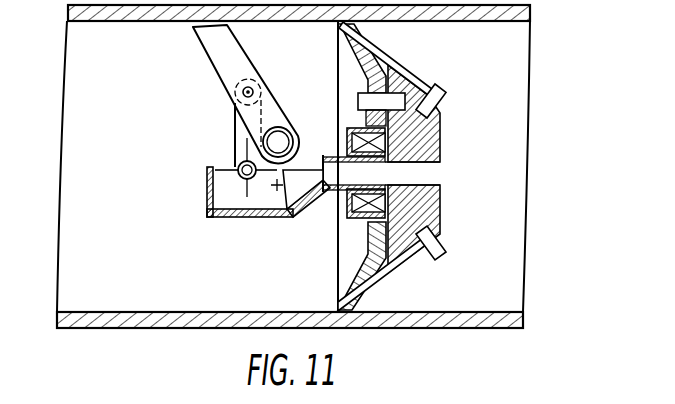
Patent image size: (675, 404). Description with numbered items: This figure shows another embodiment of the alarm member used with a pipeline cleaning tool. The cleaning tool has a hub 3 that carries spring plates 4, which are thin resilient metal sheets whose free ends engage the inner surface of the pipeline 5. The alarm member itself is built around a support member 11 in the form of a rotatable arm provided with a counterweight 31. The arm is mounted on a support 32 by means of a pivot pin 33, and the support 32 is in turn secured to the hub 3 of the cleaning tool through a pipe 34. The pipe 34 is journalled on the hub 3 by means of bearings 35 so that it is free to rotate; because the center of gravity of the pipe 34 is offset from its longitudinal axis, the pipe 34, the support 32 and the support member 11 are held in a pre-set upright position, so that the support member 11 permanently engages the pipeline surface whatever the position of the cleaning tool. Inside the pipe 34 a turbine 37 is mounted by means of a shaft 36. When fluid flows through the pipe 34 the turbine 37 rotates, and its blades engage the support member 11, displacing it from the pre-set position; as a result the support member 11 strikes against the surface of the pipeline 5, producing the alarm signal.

The hub 3 is at (405, 230).
The spring plates 4 is at (402, 76).
The pipeline 5 is at (498, 23).
The support member 11 is at (235, 52).
The counterweight 31 is at (268, 170).
The support 32 is at (230, 126).
The pivot pin 33 is at (235, 87).
The pipe 34 is at (327, 155).
The bearings 35 is at (377, 200).
The shaft 36 is at (236, 162).
The turbine 37 is at (240, 178).